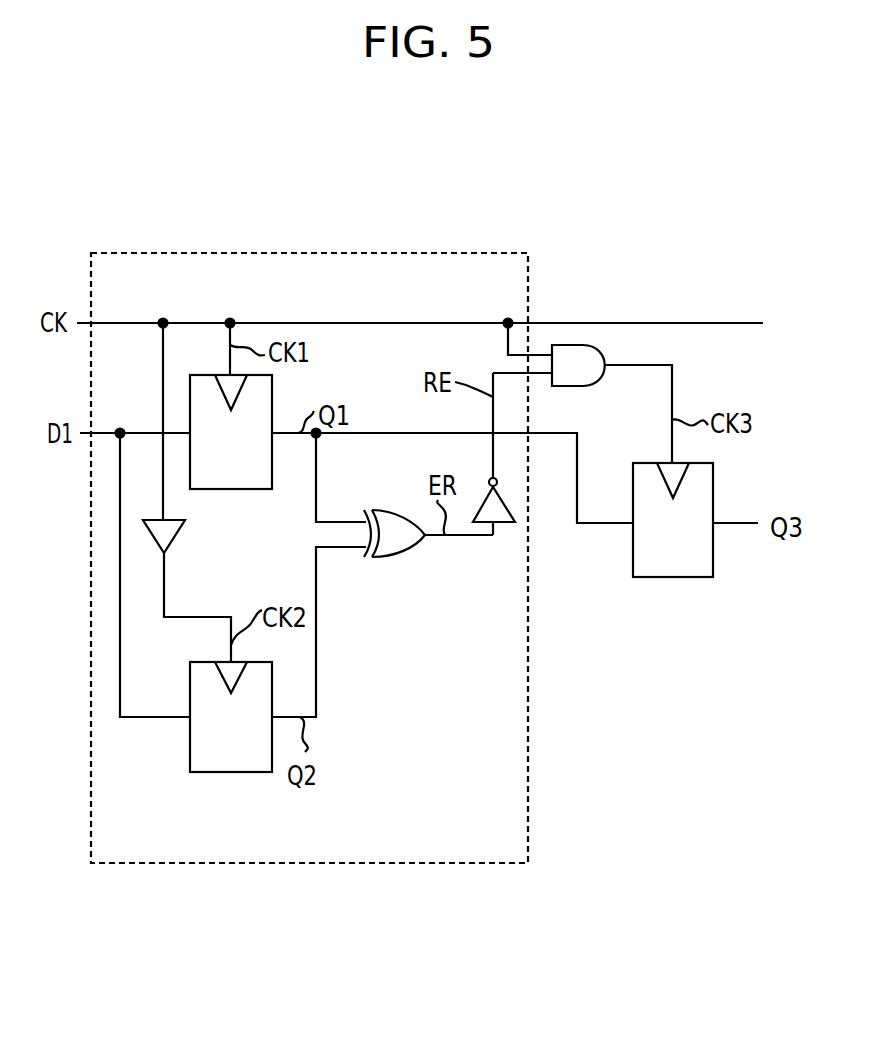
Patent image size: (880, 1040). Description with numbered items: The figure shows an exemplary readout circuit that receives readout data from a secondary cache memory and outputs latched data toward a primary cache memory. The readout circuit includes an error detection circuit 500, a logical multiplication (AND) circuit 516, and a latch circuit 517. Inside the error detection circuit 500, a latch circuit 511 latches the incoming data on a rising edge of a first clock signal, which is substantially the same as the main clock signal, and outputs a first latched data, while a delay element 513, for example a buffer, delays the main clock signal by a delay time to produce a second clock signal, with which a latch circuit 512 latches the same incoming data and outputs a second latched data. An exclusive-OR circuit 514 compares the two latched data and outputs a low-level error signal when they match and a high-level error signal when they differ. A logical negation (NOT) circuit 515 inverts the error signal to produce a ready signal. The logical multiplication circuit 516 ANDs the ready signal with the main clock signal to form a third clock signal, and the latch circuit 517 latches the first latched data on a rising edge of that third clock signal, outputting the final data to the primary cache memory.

The error detection circuit 500 is at (528, 760).
The latch circuit 511 is at (230, 489).
The latch circuit 512 is at (230, 772).
The delay element 513 is at (152, 543).
The exclusive-OR circuit 514 is at (380, 510).
The logical negation (NOT) circuit 515 is at (505, 525).
The logical multiplication (AND) circuit 516 is at (600, 348).
The latch circuit 517 is at (673, 577).